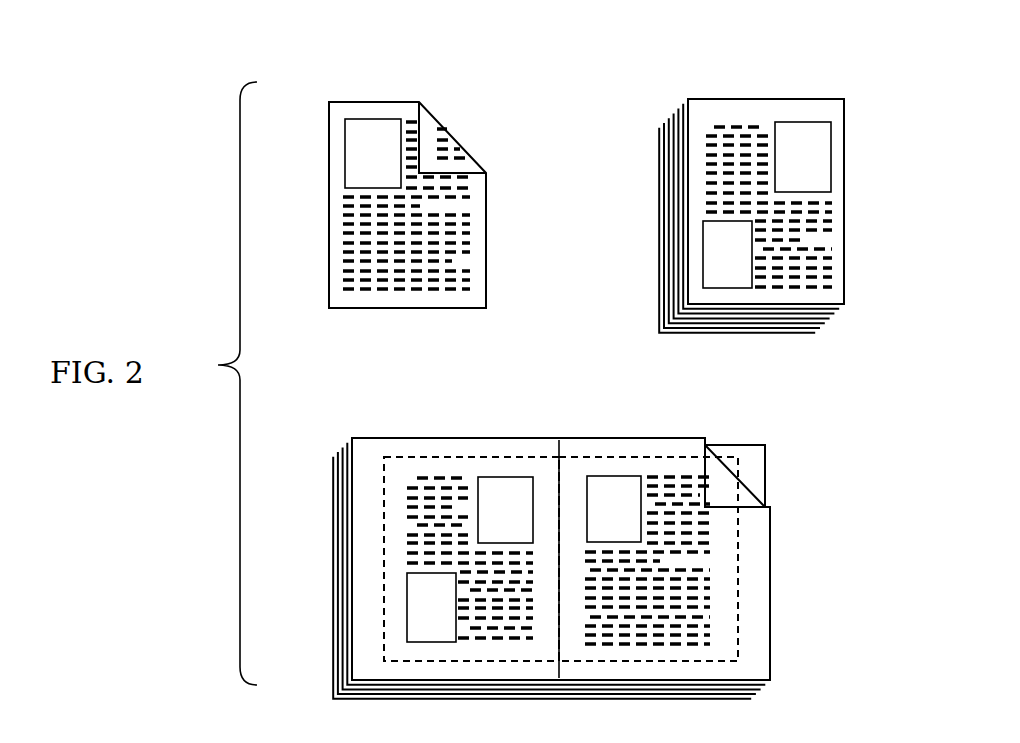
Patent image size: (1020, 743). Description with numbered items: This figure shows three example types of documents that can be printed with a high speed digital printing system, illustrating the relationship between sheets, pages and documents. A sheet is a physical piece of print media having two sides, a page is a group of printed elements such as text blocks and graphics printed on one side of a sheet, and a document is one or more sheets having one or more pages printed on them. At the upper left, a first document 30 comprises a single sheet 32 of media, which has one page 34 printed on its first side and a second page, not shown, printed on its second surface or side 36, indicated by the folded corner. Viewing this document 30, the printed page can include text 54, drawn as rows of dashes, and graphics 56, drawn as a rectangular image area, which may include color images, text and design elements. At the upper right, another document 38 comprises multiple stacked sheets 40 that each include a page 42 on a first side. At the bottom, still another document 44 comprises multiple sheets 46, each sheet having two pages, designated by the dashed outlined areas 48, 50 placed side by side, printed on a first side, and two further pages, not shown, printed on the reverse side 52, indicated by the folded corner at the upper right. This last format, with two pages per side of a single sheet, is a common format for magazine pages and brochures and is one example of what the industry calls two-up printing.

The first document 30 is at (422, 190).
The sheet 32 is at (340, 298).
The page 34 is at (368, 250).
The second surface or side 36 is at (440, 127).
The document 38 is at (719, 176).
The sheets 40 is at (670, 223).
The page 42 is at (752, 152).
The document 44 is at (567, 529).
The sheets 46 is at (340, 548).
The outlined area 48 is at (443, 457).
The outlined area 50 is at (610, 457).
The reverse side 52 is at (722, 480).
The text 54 is at (445, 283).
The graphics 56 is at (382, 138).